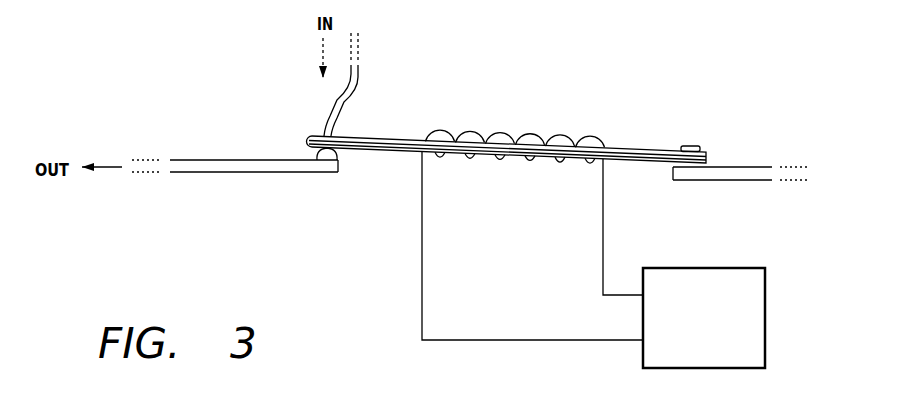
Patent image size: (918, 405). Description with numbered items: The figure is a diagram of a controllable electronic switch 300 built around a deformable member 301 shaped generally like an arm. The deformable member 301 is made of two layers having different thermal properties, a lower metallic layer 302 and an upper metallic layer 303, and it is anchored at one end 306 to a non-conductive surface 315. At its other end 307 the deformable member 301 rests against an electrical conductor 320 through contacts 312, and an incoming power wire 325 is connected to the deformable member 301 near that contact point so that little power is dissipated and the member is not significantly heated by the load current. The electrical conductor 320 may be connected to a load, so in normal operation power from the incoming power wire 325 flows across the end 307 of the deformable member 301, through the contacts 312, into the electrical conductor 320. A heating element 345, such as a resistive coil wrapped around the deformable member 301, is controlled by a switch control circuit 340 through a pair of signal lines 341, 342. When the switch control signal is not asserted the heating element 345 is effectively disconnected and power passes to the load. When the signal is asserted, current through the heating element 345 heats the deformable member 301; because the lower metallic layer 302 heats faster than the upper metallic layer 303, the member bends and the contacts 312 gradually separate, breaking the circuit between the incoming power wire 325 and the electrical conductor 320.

The controllable electronic switch 300 is at (605, 58).
The deformable member 301 is at (381, 126).
The lower metallic layer 302 is at (642, 162).
The upper metallic layer 303 is at (631, 150).
The anchored end 306 is at (705, 132).
The end of deformable member 307 is at (301, 136).
The contacts 312 is at (345, 159).
The non-conductive surface 315 is at (745, 182).
The electrical conductor 320 is at (225, 175).
The incoming power wire 325 is at (362, 79).
The switch control circuit 340 is at (767, 318).
The signal line 341 is at (601, 248).
The signal line 342 is at (530, 344).
The heating element 345 is at (527, 134).